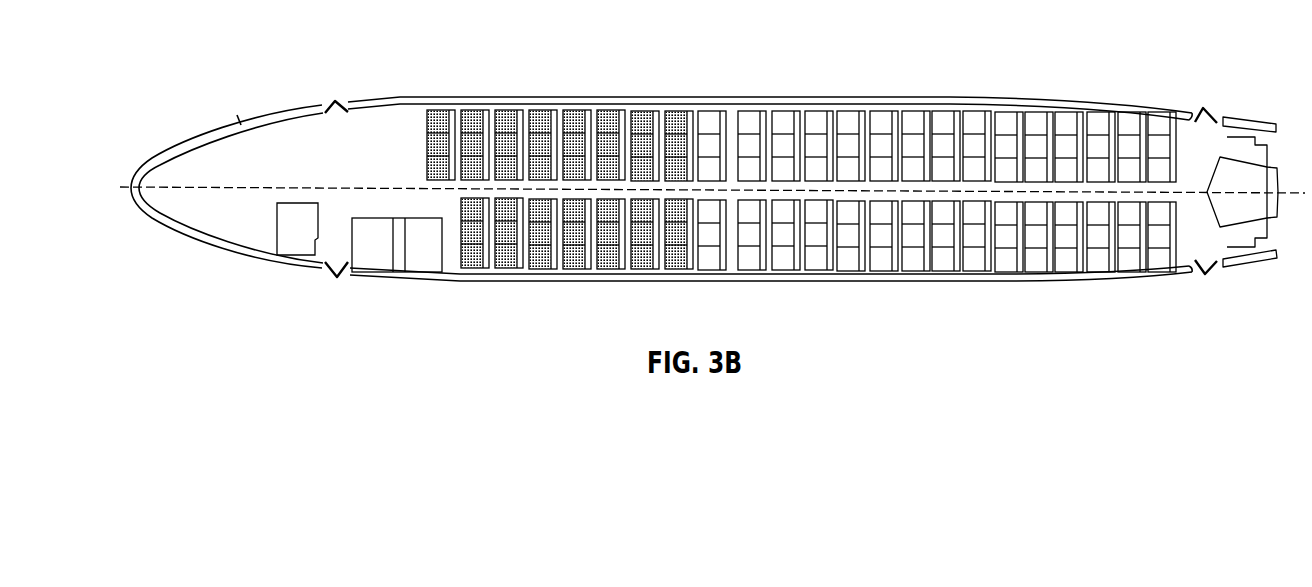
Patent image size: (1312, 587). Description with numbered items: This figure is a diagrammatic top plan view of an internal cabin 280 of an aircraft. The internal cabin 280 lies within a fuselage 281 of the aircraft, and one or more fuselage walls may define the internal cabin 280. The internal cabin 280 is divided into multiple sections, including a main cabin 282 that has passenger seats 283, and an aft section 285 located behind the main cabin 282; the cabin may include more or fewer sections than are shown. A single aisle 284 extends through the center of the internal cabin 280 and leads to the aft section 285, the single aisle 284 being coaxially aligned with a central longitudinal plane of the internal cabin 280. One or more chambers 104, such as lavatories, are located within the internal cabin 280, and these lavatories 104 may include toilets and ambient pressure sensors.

The internal cabin 280 is at (350, 50).
The fuselage 281 is at (531, 108).
The main cabin 282 is at (473, 123).
The passenger seats 283 is at (710, 128).
The single aisle 284 is at (820, 185).
The aft section 285 is at (1193, 133).
The chamber 104 is at (398, 245).